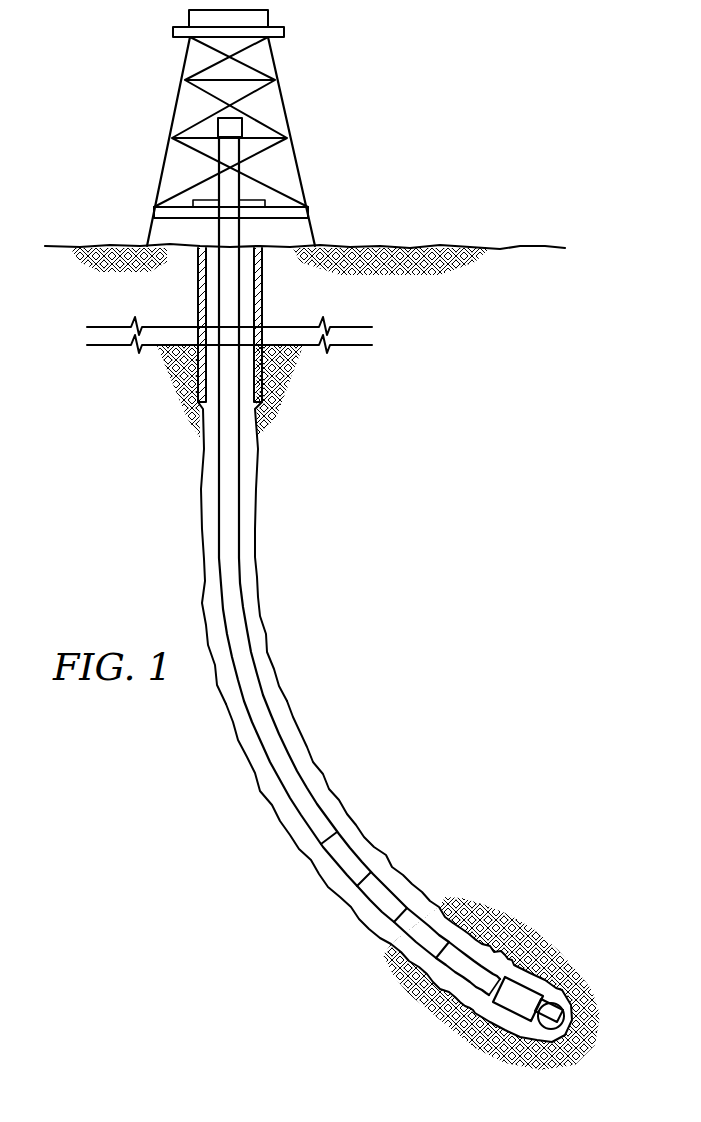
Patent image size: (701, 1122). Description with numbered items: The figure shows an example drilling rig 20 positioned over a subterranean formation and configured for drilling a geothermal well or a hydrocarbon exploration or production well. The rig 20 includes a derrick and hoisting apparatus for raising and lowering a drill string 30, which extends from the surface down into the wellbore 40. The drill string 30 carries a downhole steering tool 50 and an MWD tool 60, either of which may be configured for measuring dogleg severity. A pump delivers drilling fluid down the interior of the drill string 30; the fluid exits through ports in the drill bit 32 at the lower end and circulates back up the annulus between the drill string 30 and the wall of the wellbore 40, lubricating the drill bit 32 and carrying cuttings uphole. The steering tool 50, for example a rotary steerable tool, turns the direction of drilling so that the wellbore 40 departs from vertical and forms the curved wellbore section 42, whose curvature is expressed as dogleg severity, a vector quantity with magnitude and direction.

The drilling rig 20 is at (285, 108).
The drill string 30 is at (226, 582).
The drill bit 32 is at (527, 993).
The wellbore 40 is at (253, 467).
The curved wellbore section 42 is at (342, 905).
The steering tool 50 is at (490, 947).
The MWD tool 60 is at (348, 848).